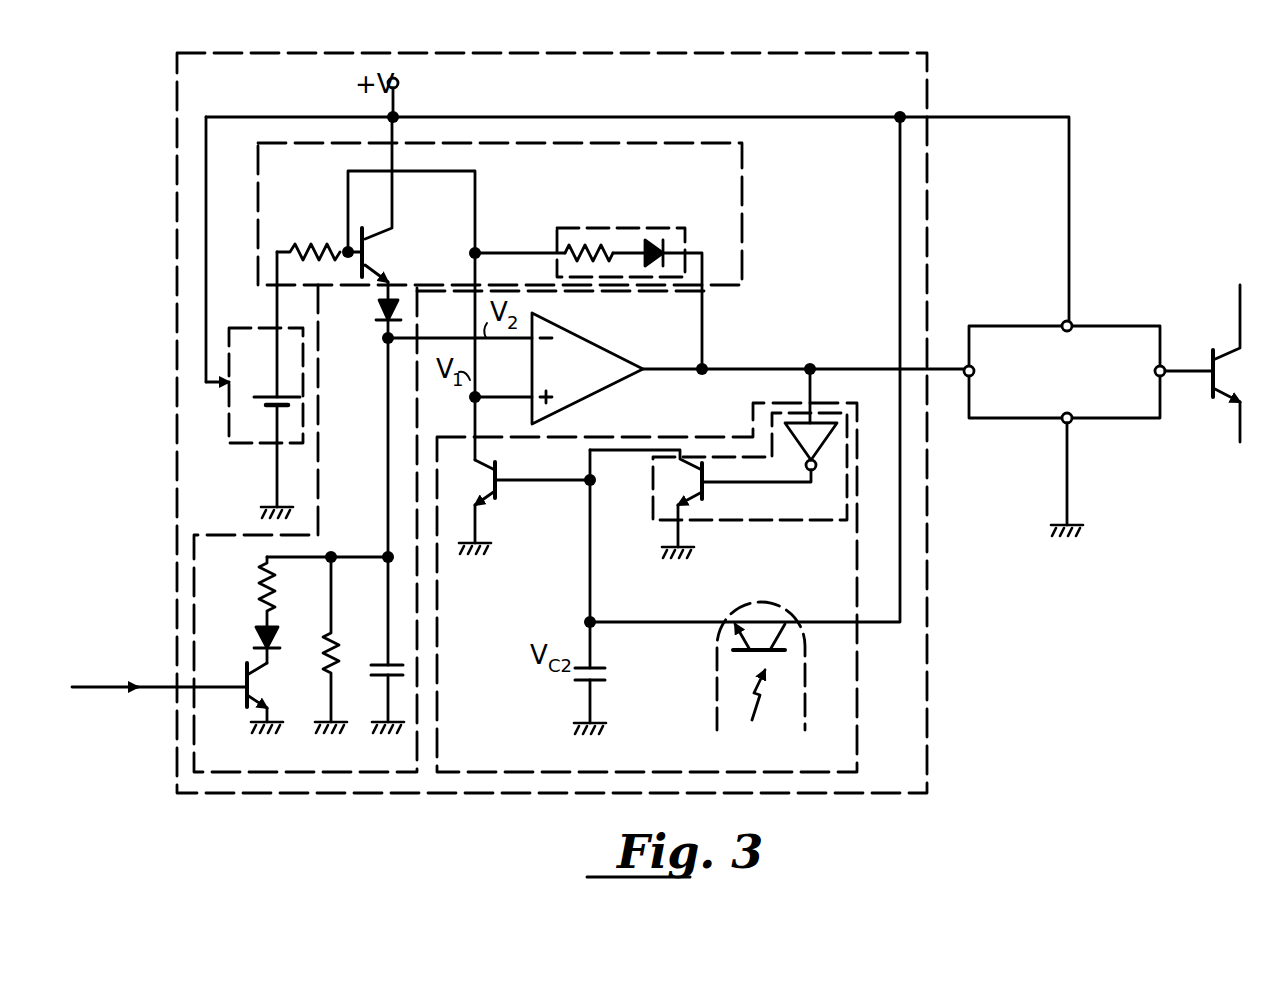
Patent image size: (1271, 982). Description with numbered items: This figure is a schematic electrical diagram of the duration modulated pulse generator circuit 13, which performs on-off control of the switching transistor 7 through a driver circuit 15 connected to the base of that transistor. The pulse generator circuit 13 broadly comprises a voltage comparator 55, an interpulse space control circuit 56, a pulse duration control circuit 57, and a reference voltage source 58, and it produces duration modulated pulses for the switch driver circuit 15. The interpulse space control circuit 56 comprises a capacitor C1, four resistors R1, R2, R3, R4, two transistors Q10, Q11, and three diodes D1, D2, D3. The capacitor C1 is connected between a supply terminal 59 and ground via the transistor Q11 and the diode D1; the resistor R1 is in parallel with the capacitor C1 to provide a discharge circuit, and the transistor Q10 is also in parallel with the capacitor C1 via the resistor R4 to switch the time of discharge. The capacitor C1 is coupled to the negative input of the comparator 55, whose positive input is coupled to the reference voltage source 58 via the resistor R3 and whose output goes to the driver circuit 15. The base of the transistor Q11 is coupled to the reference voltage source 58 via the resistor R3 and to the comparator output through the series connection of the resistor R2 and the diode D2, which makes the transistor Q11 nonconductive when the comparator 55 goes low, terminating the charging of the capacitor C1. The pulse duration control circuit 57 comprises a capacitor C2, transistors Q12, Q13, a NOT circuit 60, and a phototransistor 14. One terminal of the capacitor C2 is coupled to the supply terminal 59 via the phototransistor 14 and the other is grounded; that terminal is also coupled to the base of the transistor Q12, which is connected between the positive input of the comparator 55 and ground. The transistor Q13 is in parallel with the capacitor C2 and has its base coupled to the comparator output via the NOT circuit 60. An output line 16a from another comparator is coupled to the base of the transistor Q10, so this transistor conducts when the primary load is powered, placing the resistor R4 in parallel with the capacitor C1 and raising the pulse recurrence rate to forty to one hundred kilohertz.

The duration modulated pulse generator circuit 13 is at (927, 98).
The supply terminal 59 is at (398, 83).
The interpulse space control circuit 56 is at (742, 217).
The reference voltage source 58 is at (253, 447).
The voltage comparator 55 is at (590, 346).
The pulse duration control circuit 57 is at (857, 703).
The NOT circuit 60 is at (822, 440).
The phototransistor 14 is at (771, 630).
The driver circuit 15 is at (1096, 334).
The switching transistor 7 is at (1213, 356).
The output line 16a is at (99, 684).
The transistor Q11 is at (398, 232).
The resistor R3 is at (325, 245).
The diode D1 is at (380, 306).
The resistor R2 is at (588, 240).
The diode D2 is at (655, 240).
The transistor Q12 is at (505, 495).
The transistor Q13 is at (683, 468).
The capacitor C2 is at (598, 665).
The resistor R4 is at (262, 582).
The diode D3 is at (257, 638).
The transistor Q10 is at (263, 680).
The resistor R1 is at (337, 642).
The capacitor C1 is at (374, 673).